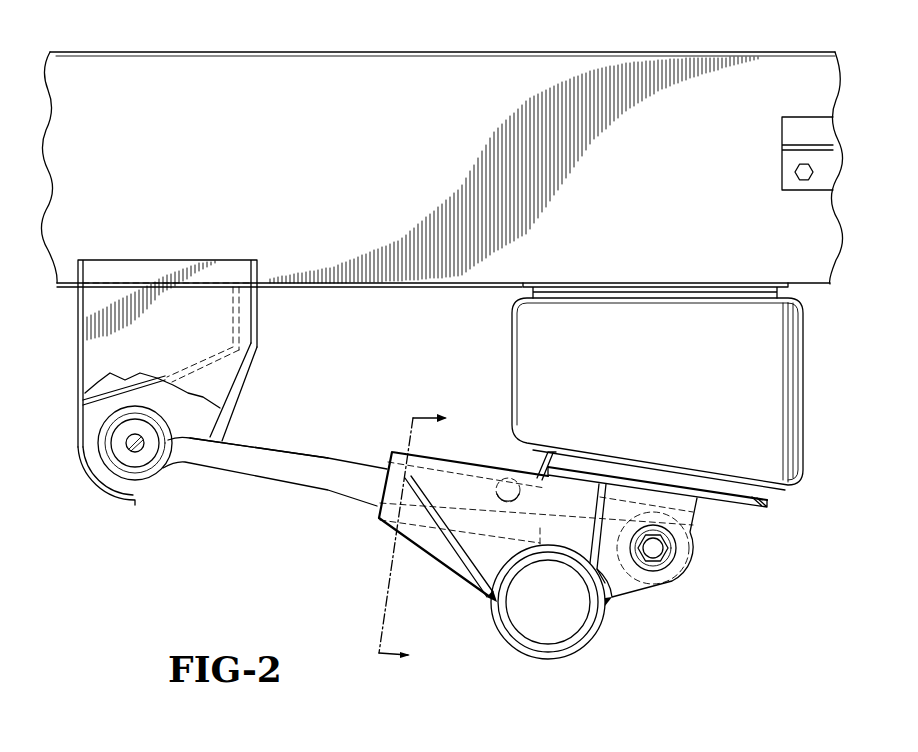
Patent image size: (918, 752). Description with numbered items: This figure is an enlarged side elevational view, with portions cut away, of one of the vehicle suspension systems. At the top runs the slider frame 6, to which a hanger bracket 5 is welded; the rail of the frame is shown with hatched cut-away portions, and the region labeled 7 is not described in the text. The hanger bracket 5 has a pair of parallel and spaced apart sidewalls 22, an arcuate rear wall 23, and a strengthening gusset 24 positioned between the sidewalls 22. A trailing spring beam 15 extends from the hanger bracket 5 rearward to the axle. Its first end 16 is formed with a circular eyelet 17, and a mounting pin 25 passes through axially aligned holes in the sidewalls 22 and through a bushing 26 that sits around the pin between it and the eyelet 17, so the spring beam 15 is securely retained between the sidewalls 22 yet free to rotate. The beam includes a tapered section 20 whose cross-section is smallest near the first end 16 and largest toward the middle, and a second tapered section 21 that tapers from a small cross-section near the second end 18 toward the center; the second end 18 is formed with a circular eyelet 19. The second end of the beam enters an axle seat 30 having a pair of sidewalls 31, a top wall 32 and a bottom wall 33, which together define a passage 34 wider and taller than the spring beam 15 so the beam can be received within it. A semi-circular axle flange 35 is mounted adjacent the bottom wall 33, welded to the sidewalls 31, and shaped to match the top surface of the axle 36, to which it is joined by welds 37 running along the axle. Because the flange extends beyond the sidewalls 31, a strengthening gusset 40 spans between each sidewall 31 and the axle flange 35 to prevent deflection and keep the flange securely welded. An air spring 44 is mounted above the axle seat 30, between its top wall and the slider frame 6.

The hanger bracket 5 is at (246, 350).
The slider frame 6 is at (567, 52).
The vehicle frame rail 7 is at (360, 62).
The trailing spring beam 15 is at (303, 452).
The first end 16 is at (95, 443).
The circular eyelet 17 is at (112, 468).
The second end 18 is at (690, 533).
The circular eyelet 19 is at (677, 568).
The tapered section 20 is at (262, 470).
The second tapered section 21 is at (580, 513).
The sidewalls 22 is at (247, 316).
The arcuate rear wall 23 is at (80, 416).
The strengthening gusset 24 is at (112, 390).
The mounting pin 25 is at (138, 452).
The bushing 26 is at (130, 466).
The axle seat 30 is at (655, 587).
The sidewalls 31 is at (423, 540).
The top wall 32 is at (478, 470).
The bottom wall 33 is at (470, 533).
The passage 34 is at (385, 468).
The axle flange 35 is at (602, 583).
The axle 36 is at (547, 658).
The welds 37 is at (608, 603).
The strengthening gusset 40 is at (478, 568).
The air spring 44 is at (523, 333).